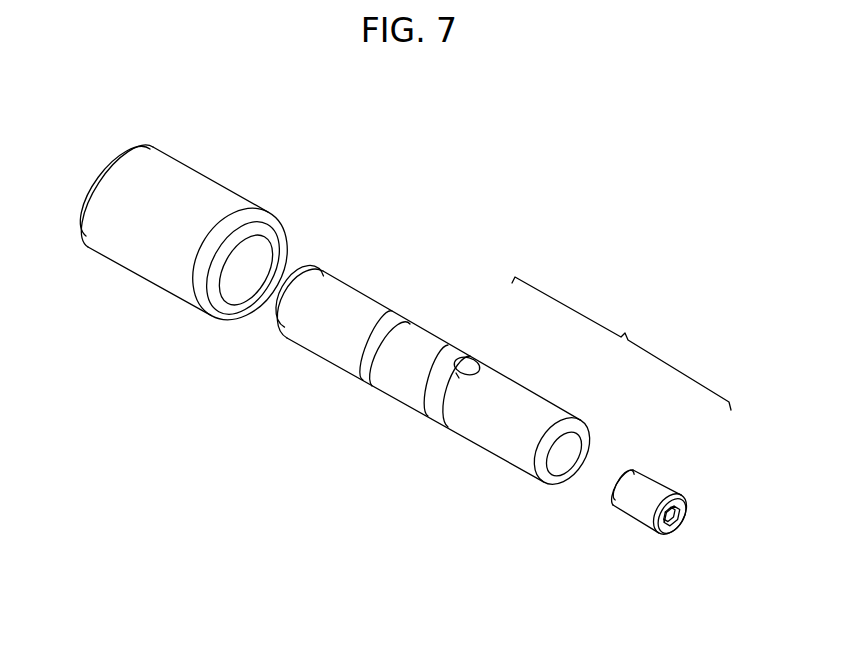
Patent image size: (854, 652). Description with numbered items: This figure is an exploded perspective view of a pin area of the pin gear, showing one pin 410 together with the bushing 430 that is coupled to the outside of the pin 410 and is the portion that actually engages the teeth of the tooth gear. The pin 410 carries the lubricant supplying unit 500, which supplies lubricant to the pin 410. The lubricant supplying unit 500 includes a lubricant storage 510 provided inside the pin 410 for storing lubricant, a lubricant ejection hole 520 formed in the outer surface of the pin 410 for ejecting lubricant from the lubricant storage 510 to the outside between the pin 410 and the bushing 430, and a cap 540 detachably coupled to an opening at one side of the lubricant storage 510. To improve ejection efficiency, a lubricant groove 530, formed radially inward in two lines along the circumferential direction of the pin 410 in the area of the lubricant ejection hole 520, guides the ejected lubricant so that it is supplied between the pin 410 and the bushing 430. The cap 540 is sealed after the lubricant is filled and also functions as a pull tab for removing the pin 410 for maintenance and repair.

The bushing 430 is at (157, 270).
The pin 410 is at (325, 348).
The lubricant groove 530 is at (389, 325).
The lubricant ejection hole 520 is at (470, 362).
The lubricant storage 510 is at (575, 447).
The lubricant supplying unit 500 is at (621, 343).
The cap 540 is at (655, 487).